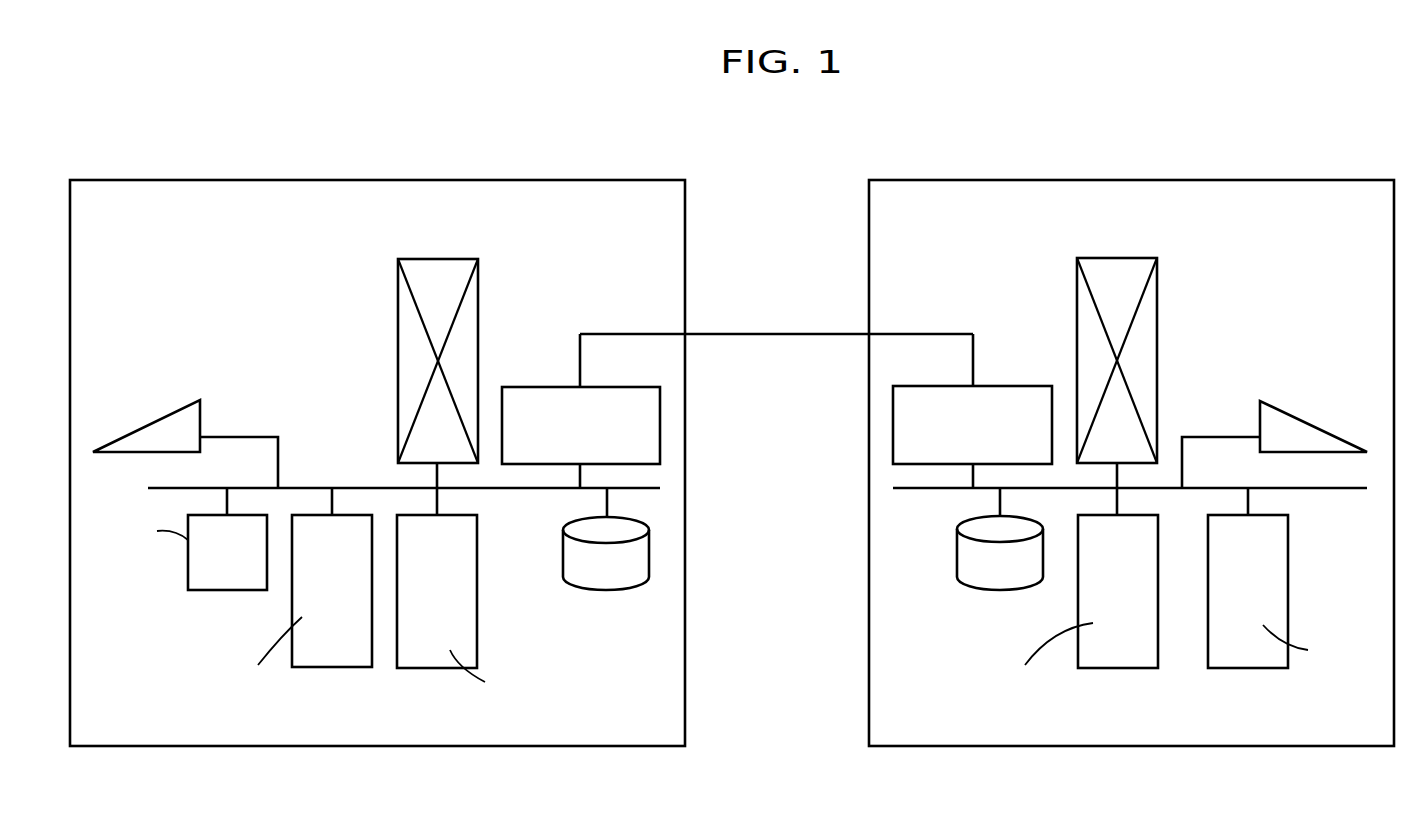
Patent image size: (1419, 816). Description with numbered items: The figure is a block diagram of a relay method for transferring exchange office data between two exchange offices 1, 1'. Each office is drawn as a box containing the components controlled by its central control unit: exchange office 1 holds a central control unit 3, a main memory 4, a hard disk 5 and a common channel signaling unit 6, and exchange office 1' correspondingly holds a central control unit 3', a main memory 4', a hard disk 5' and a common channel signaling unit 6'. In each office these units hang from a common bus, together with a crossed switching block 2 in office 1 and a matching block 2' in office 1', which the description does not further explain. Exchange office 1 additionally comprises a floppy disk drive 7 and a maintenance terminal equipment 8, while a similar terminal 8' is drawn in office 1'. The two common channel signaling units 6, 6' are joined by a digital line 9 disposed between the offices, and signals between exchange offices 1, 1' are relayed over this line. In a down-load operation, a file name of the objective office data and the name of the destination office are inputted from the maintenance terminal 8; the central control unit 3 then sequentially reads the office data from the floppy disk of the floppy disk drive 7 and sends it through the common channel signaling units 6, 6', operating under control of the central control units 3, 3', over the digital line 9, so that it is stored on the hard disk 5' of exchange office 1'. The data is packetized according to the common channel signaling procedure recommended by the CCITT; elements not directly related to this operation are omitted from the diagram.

The exchange office 1 is at (377, 441).
The exchange office 1' is at (1131, 441).
The switching network 2 is at (438, 347).
The switching network 2' is at (1117, 347).
The central control unit 3 is at (487, 606).
The central control unit 3' is at (1067, 613).
The main memory 4 is at (284, 605).
The main memory 4' is at (1297, 606).
The hard disk 5 is at (606, 571).
The hard disk 5' is at (1000, 571).
The common channel signaling unit 6 is at (581, 411).
The common channel signaling unit 6' is at (972, 411).
The floppy disk drive 7 is at (225, 590).
The maintenance terminal equipment 8 is at (185, 426).
The input/output device 8' is at (1274, 425).
The digital line 9 is at (776, 334).